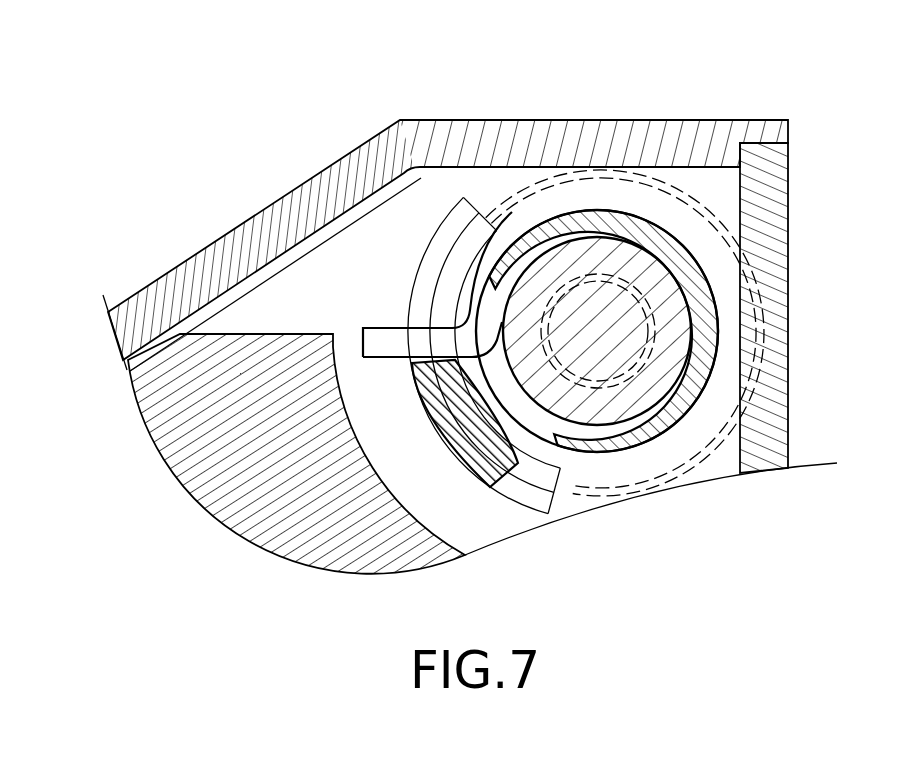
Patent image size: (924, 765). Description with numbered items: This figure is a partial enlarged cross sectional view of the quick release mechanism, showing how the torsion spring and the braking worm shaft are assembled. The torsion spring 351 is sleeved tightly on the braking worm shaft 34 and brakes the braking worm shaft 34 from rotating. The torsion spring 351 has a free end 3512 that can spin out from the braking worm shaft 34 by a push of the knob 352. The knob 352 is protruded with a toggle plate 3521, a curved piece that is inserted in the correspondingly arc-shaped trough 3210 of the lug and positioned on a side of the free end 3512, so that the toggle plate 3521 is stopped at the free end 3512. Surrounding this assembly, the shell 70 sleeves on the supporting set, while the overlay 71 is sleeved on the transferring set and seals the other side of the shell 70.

The shell 70 is at (627, 136).
The overlay 71 is at (777, 205).
The knob 352 is at (547, 177).
The trough 3210 is at (437, 232).
The free end 3512 is at (380, 338).
The torsion spring 351 is at (688, 290).
The braking worm shaft 34 is at (667, 327).
The toggle plate 3521 is at (452, 428).